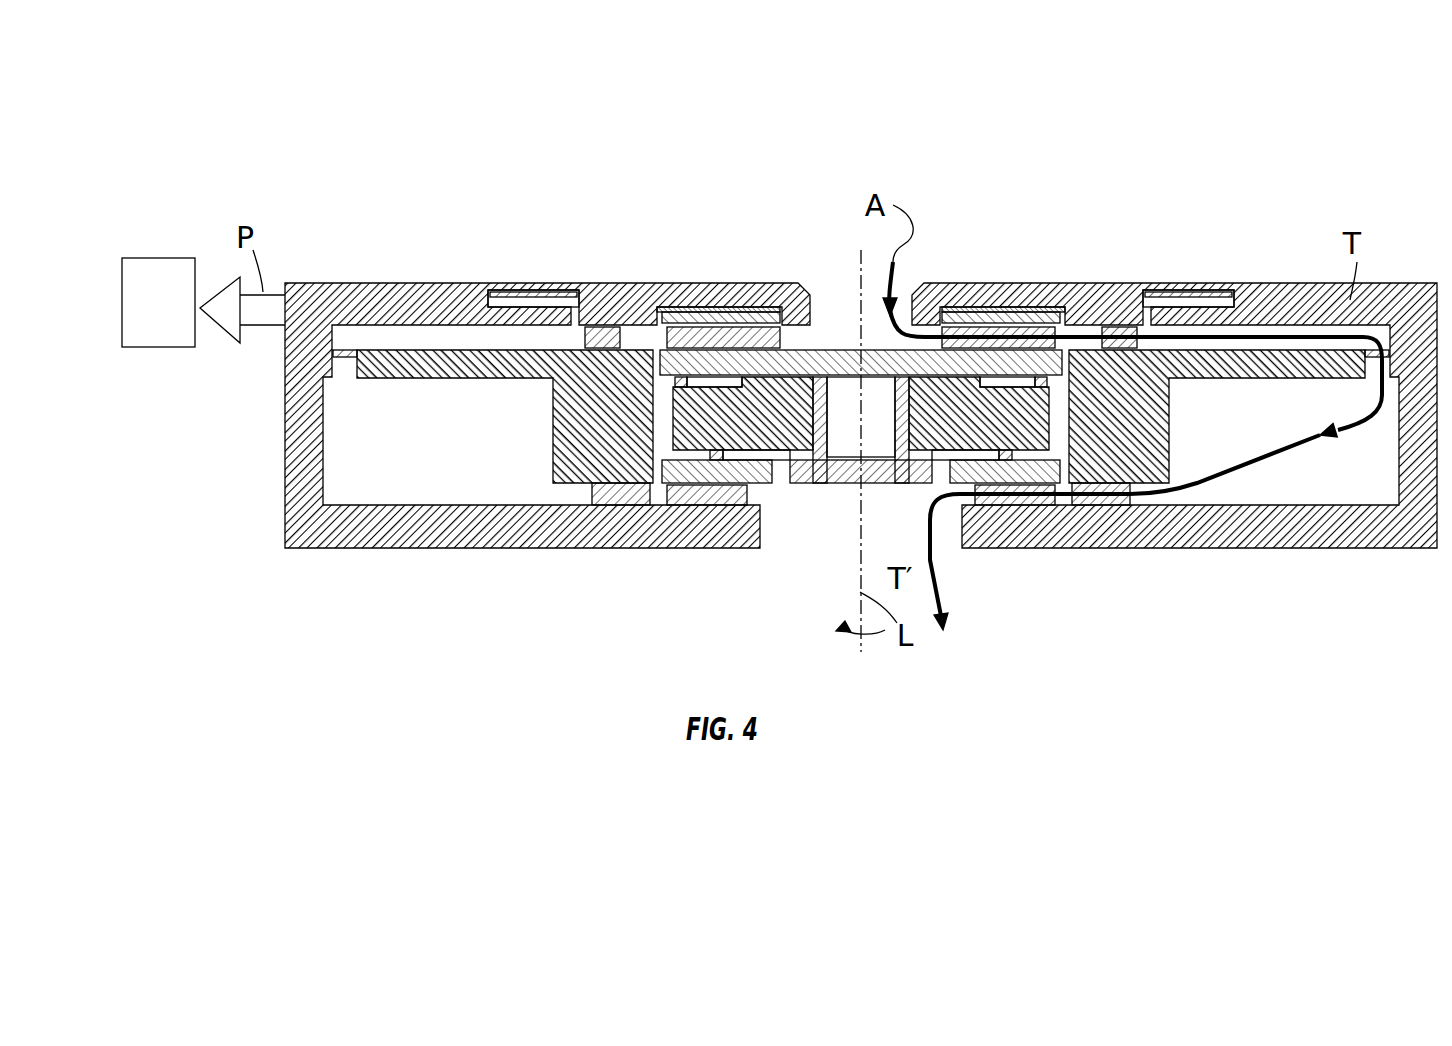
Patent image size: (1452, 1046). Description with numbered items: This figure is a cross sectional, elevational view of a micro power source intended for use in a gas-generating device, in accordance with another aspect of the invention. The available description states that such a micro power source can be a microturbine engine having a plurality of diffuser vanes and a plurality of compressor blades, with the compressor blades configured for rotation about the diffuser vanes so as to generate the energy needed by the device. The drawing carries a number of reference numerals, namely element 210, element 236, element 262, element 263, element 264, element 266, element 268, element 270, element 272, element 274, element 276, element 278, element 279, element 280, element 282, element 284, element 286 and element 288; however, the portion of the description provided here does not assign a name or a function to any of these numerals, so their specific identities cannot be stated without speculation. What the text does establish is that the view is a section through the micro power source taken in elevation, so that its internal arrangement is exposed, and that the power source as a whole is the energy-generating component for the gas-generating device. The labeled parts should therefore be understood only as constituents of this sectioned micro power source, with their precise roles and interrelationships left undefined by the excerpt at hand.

The controller / power supply 210 is at (174, 316).
The cavity 236 is at (444, 462).
The actuator assembly 262 is at (1200, 145).
The housing 263 is at (1278, 300).
The spacer 264 is at (603, 328).
The coil 266 is at (670, 327).
The opening 268 is at (856, 325).
The rotor plate 270 is at (805, 350).
The hub 272 is at (893, 432).
The plate 274 is at (575, 318).
The recess 276 is at (490, 292).
The rotor block 278 is at (343, 372).
The gap 279 is at (782, 475).
The bearing 280 is at (352, 349).
The magnet 282 is at (742, 313).
The magnet 284 is at (703, 307).
The spacer 286 is at (603, 505).
The opening 288 is at (842, 582).